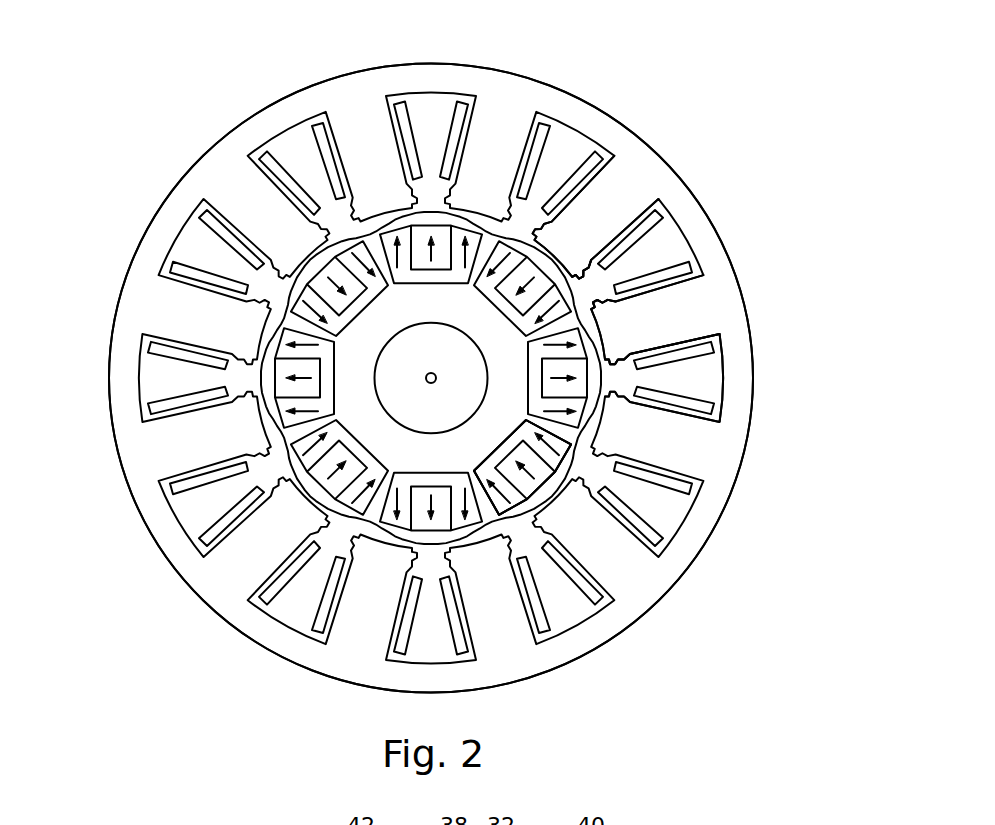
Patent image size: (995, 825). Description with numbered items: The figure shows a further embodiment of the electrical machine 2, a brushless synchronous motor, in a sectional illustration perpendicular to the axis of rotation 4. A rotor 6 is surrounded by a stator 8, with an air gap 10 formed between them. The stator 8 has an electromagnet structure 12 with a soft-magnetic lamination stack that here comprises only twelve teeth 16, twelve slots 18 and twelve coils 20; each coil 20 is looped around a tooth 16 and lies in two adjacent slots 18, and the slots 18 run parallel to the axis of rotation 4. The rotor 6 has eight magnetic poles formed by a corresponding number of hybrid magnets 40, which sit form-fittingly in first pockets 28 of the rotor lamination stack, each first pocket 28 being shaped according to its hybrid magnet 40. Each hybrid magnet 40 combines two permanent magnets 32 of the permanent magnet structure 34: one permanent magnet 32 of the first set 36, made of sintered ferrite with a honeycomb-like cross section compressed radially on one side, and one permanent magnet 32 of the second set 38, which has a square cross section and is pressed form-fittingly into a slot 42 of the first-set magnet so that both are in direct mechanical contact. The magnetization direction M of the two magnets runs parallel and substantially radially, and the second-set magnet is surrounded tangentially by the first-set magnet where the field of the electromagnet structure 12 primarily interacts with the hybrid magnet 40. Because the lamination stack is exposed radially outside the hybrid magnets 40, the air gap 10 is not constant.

The electrical machine 2 is at (695, 64).
The axis of rotation 4 is at (426, 380).
The rotor 6 is at (357, 340).
The stator 8 is at (718, 300).
The air gap 10 is at (282, 288).
The electromagnet structure 12 is at (764, 409).
The tooth 16 is at (680, 305).
The slot 18 is at (707, 373).
The coil 20 is at (687, 402).
The first pocket 28 is at (335, 274).
The permanent magnet 32 is at (472, 510).
The permanent magnet structure 34 is at (577, 233).
The first set 36 is at (553, 443).
The second set 38 is at (527, 430).
The hybrid magnet 40 is at (335, 275).
The slot 42 is at (573, 297).
The magnetization direction M is at (367, 250).